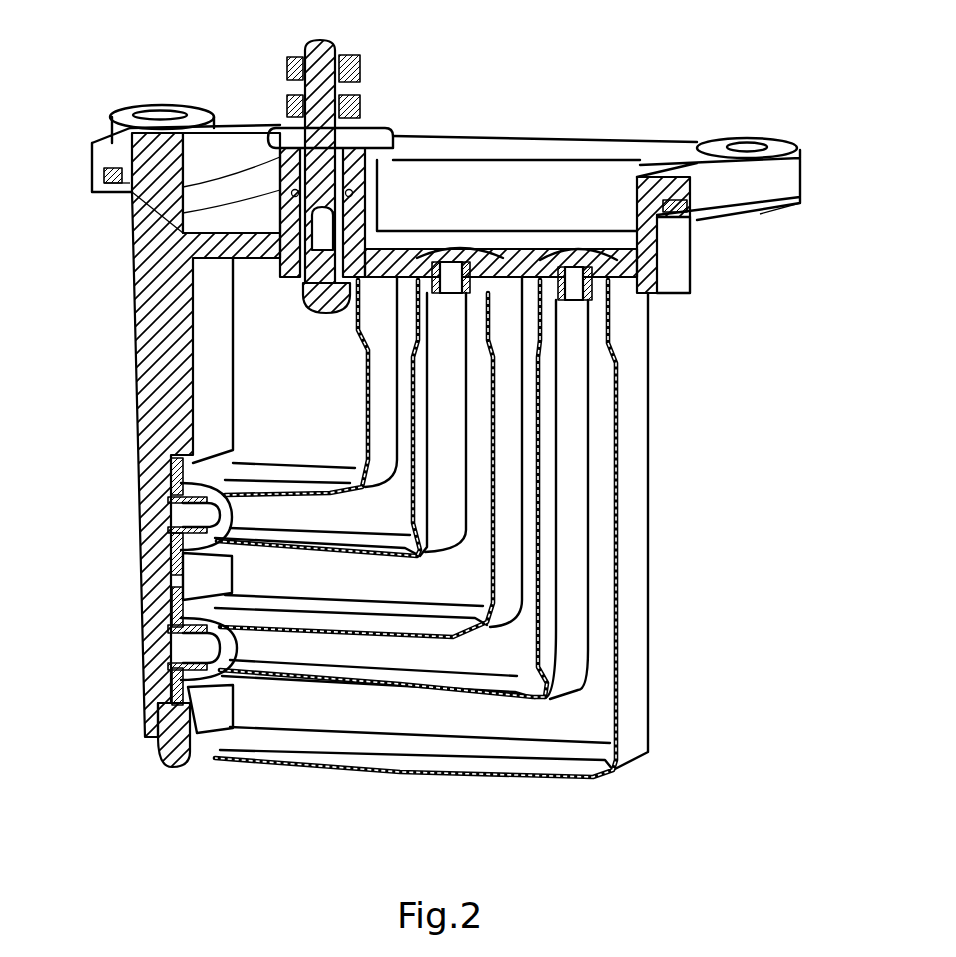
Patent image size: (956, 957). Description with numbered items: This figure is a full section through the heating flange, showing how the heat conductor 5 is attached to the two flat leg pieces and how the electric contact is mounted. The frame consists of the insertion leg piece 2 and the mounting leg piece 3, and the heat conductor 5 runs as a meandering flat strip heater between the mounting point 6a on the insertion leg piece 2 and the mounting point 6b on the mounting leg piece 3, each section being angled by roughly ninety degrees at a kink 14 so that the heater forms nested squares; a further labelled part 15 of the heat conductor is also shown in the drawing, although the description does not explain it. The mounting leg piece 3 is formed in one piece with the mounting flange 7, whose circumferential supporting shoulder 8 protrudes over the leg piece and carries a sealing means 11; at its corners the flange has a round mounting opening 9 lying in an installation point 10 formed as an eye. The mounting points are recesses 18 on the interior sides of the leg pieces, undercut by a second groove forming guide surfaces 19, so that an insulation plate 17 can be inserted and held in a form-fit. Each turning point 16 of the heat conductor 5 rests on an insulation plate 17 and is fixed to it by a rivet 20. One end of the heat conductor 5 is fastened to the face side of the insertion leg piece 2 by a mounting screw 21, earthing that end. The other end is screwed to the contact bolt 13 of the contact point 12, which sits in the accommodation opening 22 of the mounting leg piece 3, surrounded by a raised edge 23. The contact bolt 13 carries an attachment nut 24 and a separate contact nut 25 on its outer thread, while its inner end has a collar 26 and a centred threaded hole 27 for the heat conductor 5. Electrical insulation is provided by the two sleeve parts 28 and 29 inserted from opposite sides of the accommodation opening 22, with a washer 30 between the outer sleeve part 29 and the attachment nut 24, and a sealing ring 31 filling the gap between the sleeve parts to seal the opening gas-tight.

The insertion leg piece 2 is at (155, 400).
The mounting leg piece 3 is at (681, 273).
The heat conductor 5 is at (640, 367).
The mounting point 6a is at (148, 636).
The mounting point 6b is at (580, 240).
The mounting flange 7 is at (797, 170).
The supporting shoulder 8 is at (772, 215).
The mounting opening 9 is at (747, 136).
The installation point 10 is at (793, 142).
The sealing means 11 is at (712, 218).
The contact point 12 is at (352, 38).
The contact bolt 13 is at (345, 92).
The kink 14 is at (580, 688).
The bellows fold 15 is at (547, 632).
The turning point 16 is at (170, 665).
The insulation plate 17 is at (170, 600).
The recess 18 is at (172, 560).
The guide surfaces 19 is at (170, 478).
The rivet 20 is at (178, 515).
The mounting screw 21 is at (150, 713).
The accommodation opening 22 is at (185, 305).
The raised edge 23 is at (133, 230).
The attachment nut 24 is at (289, 108).
The contact nut 25 is at (289, 65).
The collar 26 is at (392, 246).
The threaded hole 27 is at (380, 228).
The insulating sleeve part 28 is at (280, 287).
The insulating sleeve part 29 is at (105, 182).
The washer 30 is at (110, 132).
The sealing ring 31 is at (190, 252).